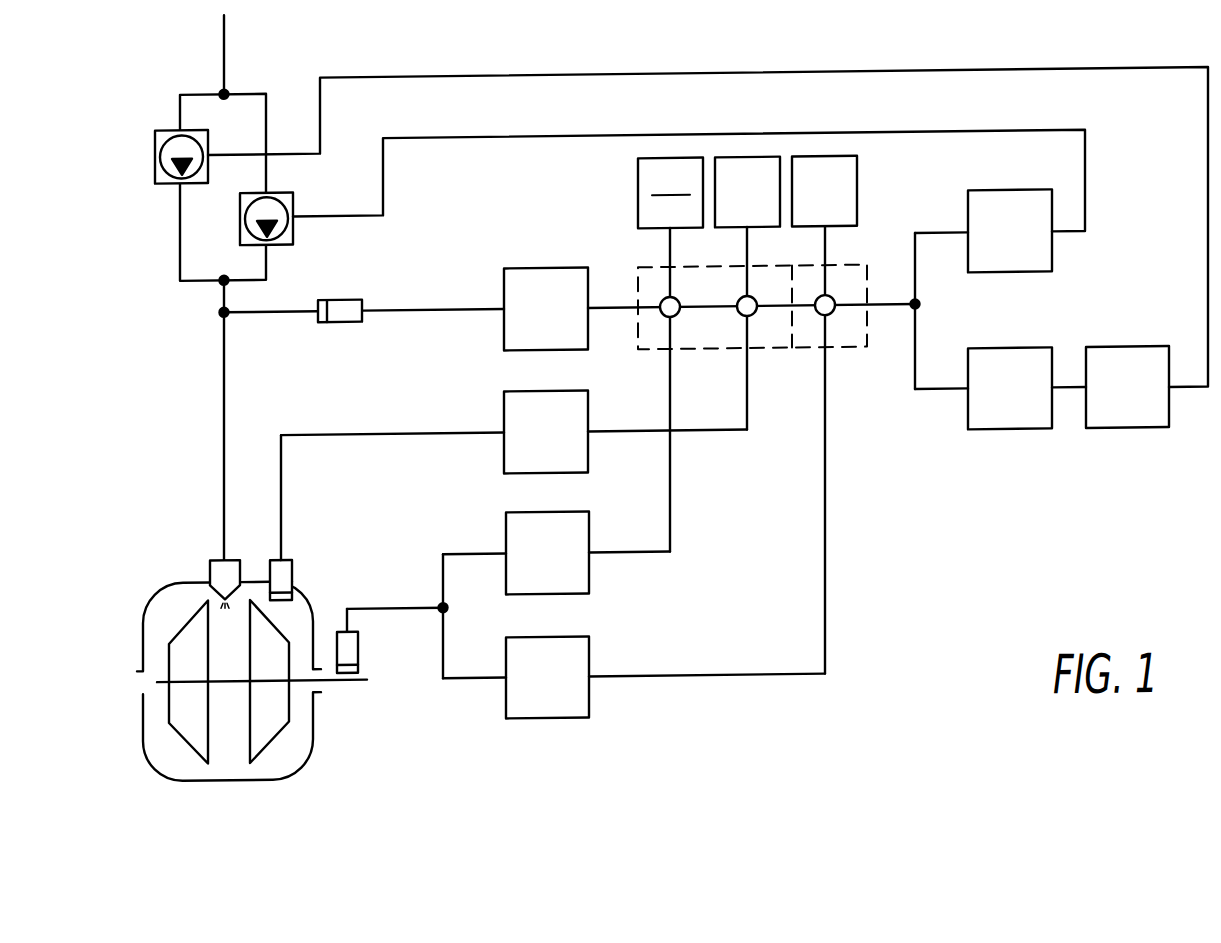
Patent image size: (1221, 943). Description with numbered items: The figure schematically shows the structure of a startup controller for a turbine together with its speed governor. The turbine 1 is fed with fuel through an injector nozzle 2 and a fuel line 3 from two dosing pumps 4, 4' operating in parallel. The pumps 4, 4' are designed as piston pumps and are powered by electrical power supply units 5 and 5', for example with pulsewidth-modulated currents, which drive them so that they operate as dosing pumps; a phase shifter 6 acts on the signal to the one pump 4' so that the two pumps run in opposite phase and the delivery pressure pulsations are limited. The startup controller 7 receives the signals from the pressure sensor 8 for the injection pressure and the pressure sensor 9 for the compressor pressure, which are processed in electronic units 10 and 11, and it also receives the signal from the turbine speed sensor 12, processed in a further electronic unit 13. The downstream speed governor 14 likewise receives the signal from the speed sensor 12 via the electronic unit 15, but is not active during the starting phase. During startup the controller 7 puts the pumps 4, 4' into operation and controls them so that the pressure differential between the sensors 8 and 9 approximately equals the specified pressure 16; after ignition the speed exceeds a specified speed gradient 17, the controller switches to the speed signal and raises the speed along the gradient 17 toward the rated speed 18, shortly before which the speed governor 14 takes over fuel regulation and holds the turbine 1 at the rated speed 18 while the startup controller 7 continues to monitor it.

The turbine 1 is at (162, 760).
The injector nozzle 2 is at (214, 567).
The fuel line 3 is at (223, 393).
The dosing pump 4 is at (662, 202).
The dosing pump 4' is at (658, 233).
The electrical power supply unit 5 is at (983, 251).
The electrical power supply unit 5' is at (1000, 409).
The phase shifter 6 is at (1130, 442).
The startup controller 7 is at (645, 274).
The pressure sensor 8 is at (335, 326).
The pressure sensor 9 is at (293, 570).
The electronic unit 10 is at (513, 274).
The electronic unit 11 is at (504, 406).
The turbine speed sensor 12 is at (358, 652).
The electronic unit 13 is at (506, 528).
The speed governor 14 is at (853, 276).
The electronic unit 15 is at (548, 725).
The specified pressure 16 is at (745, 166).
The specified speed gradient 17 is at (638, 178).
The rated speed 18 is at (857, 177).